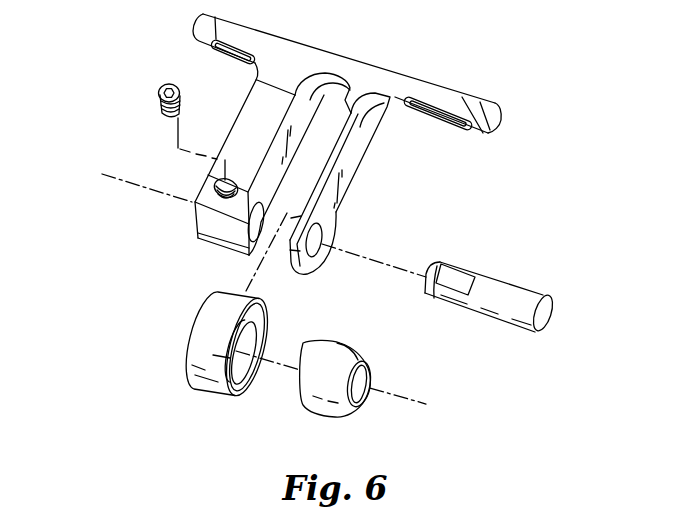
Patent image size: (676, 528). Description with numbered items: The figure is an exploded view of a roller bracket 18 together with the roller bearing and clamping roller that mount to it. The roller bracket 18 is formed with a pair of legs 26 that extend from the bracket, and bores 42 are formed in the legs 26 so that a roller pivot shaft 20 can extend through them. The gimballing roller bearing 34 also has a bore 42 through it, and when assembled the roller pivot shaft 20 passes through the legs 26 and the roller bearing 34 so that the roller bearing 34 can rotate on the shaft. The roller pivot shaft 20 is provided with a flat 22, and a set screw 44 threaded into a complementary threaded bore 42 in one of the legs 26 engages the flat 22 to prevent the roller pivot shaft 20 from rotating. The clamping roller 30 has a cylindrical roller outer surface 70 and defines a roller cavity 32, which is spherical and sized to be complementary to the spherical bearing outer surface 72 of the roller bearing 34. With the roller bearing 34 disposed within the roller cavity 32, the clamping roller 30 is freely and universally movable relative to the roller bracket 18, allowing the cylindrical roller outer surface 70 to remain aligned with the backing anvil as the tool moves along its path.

The roller bracket 18 is at (474, 107).
The roller pivot shaft 20 is at (490, 274).
The flat 22 is at (458, 278).
The legs 26 is at (252, 103).
The clamping roller 30 is at (206, 363).
The roller cavity 32 is at (240, 374).
The gimballing roller bearing 34 is at (331, 382).
The bores 42 is at (253, 240).
The set screw 44 is at (157, 91).
The cylindrical roller outer surface 70 is at (212, 338).
The spherical bearing outer surface 72 is at (330, 363).